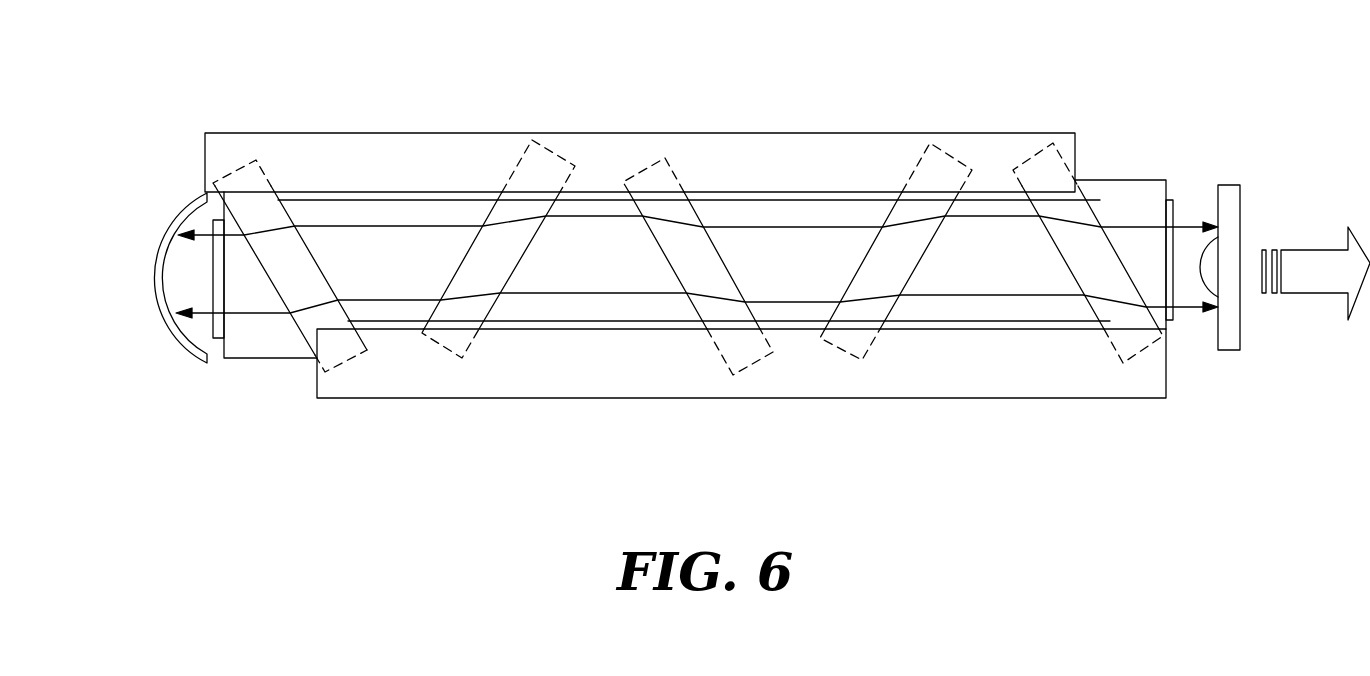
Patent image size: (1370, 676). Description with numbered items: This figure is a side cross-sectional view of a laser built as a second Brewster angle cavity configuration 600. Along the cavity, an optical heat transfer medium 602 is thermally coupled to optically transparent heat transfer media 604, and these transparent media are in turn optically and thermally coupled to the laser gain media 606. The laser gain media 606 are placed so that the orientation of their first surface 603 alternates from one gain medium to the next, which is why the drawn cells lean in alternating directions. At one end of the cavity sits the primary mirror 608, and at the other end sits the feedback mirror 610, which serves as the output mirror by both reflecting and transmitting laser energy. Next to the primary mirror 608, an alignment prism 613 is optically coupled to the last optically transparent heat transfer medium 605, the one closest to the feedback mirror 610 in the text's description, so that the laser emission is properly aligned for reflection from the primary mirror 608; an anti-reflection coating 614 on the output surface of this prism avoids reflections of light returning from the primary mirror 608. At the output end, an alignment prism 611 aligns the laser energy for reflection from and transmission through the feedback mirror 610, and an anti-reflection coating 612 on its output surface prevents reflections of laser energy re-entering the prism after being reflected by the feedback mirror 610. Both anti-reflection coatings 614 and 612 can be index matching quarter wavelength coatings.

The second Brewster angle cavity configuration 600 is at (1101, 92).
The optical heat transfer medium 602 is at (765, 133).
The first surface 603 is at (595, 198).
The optically transparent heat transfer media 604 is at (520, 207).
The last optically transparent heat transfer medium 605 is at (257, 203).
The laser gain media 606 is at (398, 283).
The primary mirror 608 is at (160, 326).
The feedback mirror 610 is at (1242, 208).
The alignment prism 611 is at (1143, 180).
The anti-reflection coating 612 is at (1172, 323).
The alignment prism 613 is at (232, 362).
The anti-reflection coating 614 is at (212, 280).